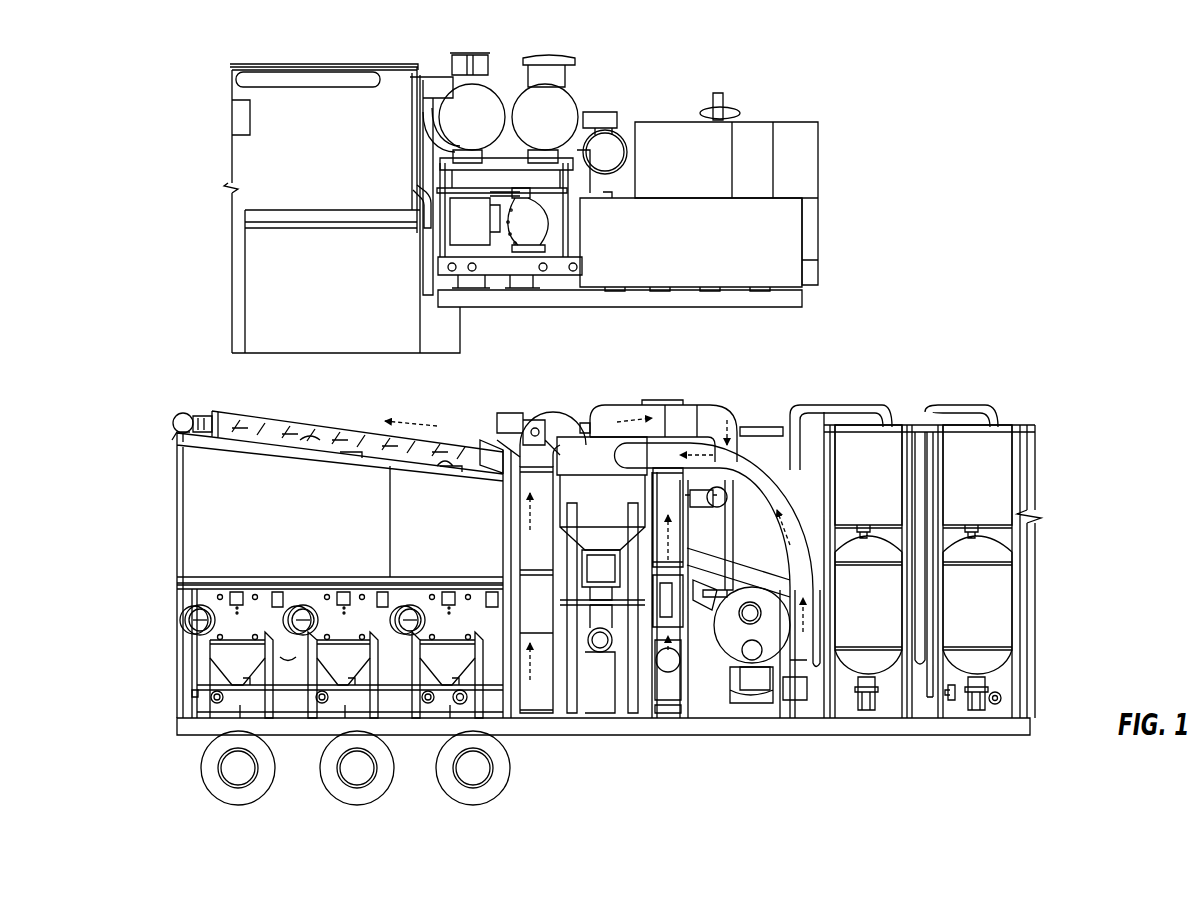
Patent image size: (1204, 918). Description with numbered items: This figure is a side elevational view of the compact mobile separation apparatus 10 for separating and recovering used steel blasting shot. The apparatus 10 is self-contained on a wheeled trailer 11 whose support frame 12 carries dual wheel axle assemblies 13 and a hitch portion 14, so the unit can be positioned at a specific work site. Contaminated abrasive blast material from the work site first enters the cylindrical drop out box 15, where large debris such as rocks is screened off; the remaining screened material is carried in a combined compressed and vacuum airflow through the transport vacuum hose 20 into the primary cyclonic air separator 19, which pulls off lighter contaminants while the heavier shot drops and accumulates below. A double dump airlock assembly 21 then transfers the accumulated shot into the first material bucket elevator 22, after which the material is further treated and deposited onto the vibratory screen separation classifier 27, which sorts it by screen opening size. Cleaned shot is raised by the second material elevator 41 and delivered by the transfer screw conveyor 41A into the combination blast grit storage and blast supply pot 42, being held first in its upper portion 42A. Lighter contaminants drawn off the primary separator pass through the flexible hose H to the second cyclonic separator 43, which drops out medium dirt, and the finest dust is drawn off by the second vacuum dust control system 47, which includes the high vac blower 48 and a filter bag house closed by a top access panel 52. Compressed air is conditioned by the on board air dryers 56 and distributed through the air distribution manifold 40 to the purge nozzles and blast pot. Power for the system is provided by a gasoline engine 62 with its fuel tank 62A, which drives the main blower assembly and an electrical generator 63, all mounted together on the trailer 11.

The mobile separation apparatus 10 is at (913, 350).
The wheeled trailer 11 is at (865, 742).
The support frame 12 is at (638, 727).
The dual wheel axle assemblies 13 is at (513, 753).
The hitch portion 14 is at (735, 302).
The cylindrical drop out box 15 is at (777, 627).
The primary cyclonic air separator 19 is at (595, 457).
The transport vacuum hose 20 is at (760, 428).
The double dump airlock assembly 21 is at (590, 594).
The first material bucket elevator 22 is at (670, 487).
The vibratory screen separation classifier 27 is at (710, 592).
The air distribution manifold 40 is at (353, 82).
The second material elevator 41 is at (538, 480).
The transfer screw conveyor 41A is at (307, 430).
The combination blast grit storage and blast supply pot 42 is at (177, 500).
The upper portion 42A is at (253, 527).
The second cyclonic separator 43 is at (803, 420).
The second vacuum dust control system 47 is at (392, 78).
The high vac blower 48 is at (537, 257).
The top access panel 52 is at (325, 67).
The on board air dryer 56 is at (895, 433).
The gasoline engine 62 is at (803, 172).
The fuel tank 62A is at (777, 253).
The electrical generator 63 is at (275, 308).
The flexible hose H is at (712, 418).